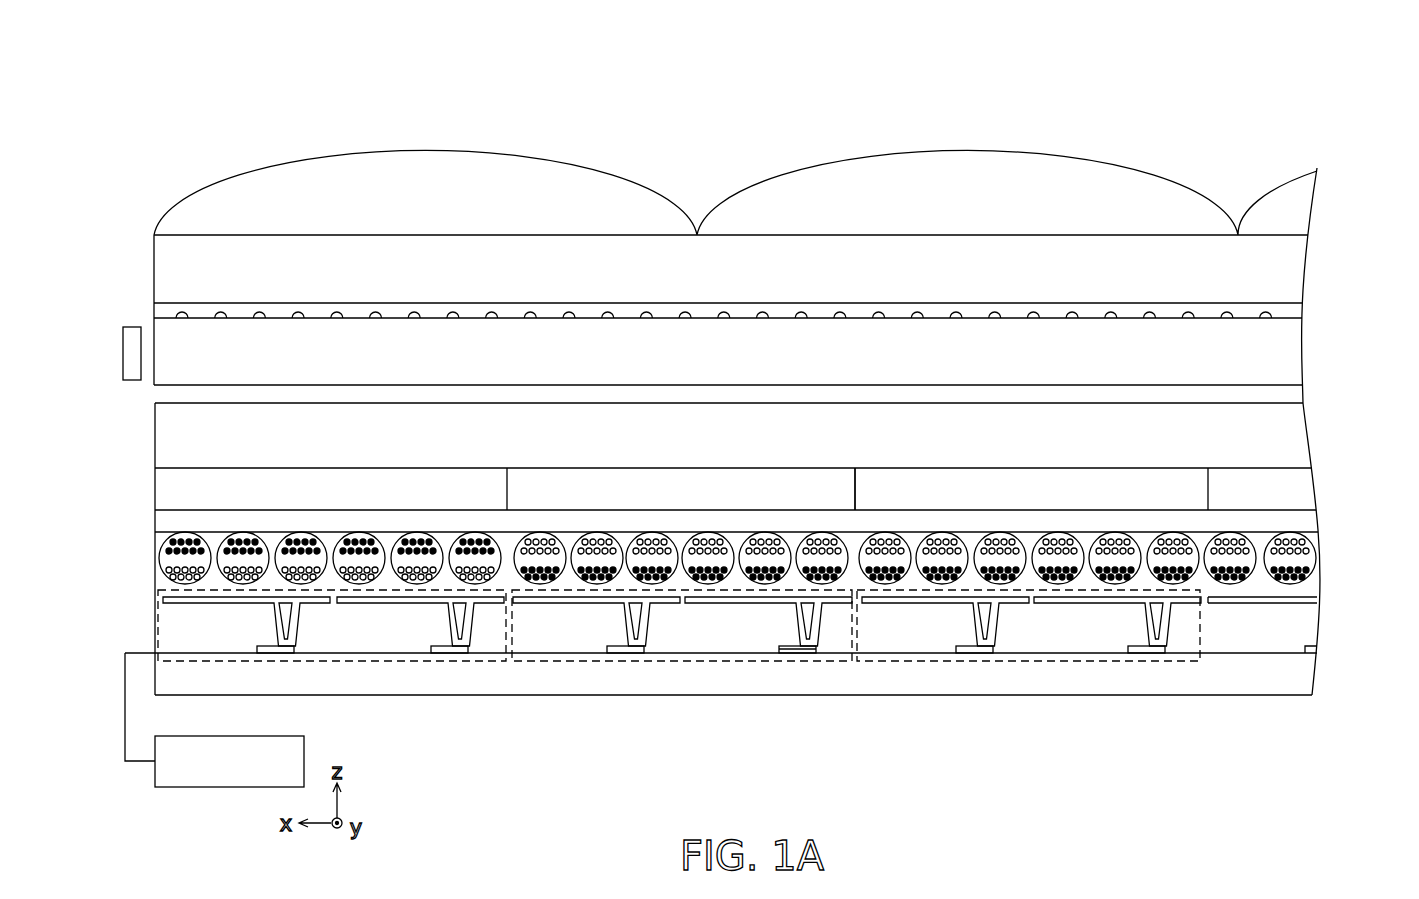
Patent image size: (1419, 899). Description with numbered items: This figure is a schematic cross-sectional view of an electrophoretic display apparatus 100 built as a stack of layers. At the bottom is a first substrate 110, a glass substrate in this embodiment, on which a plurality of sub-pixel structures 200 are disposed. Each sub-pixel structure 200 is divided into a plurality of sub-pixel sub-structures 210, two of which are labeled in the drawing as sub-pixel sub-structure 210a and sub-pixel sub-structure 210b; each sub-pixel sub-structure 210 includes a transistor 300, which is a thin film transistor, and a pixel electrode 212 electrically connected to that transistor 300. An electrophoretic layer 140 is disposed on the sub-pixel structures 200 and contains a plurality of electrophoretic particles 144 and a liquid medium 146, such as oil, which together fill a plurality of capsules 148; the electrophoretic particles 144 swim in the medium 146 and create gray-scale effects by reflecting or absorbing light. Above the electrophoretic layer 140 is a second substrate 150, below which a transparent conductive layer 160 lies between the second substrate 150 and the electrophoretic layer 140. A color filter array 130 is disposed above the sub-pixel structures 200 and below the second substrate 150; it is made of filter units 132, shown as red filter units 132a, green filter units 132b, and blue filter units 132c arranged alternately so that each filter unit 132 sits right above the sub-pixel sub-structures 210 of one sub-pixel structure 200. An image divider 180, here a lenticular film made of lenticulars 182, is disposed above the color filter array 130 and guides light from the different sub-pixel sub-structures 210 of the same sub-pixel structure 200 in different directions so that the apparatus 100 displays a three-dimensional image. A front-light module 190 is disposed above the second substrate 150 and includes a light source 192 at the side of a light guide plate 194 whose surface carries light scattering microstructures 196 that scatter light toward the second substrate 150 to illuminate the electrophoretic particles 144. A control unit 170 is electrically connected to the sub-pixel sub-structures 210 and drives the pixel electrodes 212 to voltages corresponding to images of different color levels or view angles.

The electrophoretic display apparatus 100 is at (1355, 747).
The first substrate 110 is at (1311, 668).
The color filter array 130 is at (769, 467).
The filter units 132 is at (735, 467).
The filter units 132a is at (321, 479).
The filter units 132b is at (697, 479).
The filter units 132c is at (1020, 479).
The electrophoretic layer 140 is at (774, 637).
The electrophoretic particles 144 is at (713, 567).
The medium 146 is at (598, 565).
The capsules 148 is at (584, 637).
The second substrate 150 is at (1303, 404).
The transparent conductive layer 160 is at (1316, 517).
The control unit 170 is at (215, 787).
The image divider 180 is at (767, 245).
The lenticulars 182 is at (403, 151).
The front-light module 190 is at (736, 252).
The light source 192 is at (131, 370).
The light guide plate 194 is at (175, 335).
The light scattering microstructures 196 is at (181, 311).
The sub-pixel structures 200 is at (737, 682).
The sub-pixel sub-structures 210 is at (787, 710).
The sub-pixel sub-structure 210a is at (833, 694).
The sub-pixel sub-structure 210b is at (642, 676).
The pixel electrode 212 is at (760, 598).
The transistor 300 is at (790, 650).